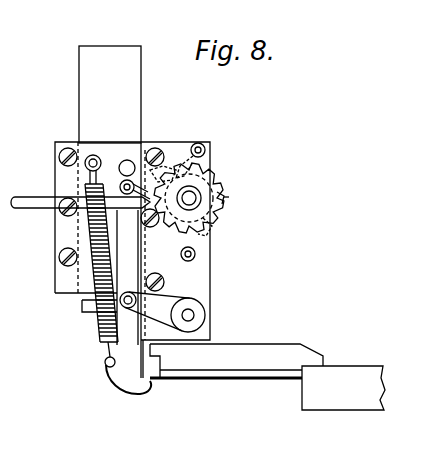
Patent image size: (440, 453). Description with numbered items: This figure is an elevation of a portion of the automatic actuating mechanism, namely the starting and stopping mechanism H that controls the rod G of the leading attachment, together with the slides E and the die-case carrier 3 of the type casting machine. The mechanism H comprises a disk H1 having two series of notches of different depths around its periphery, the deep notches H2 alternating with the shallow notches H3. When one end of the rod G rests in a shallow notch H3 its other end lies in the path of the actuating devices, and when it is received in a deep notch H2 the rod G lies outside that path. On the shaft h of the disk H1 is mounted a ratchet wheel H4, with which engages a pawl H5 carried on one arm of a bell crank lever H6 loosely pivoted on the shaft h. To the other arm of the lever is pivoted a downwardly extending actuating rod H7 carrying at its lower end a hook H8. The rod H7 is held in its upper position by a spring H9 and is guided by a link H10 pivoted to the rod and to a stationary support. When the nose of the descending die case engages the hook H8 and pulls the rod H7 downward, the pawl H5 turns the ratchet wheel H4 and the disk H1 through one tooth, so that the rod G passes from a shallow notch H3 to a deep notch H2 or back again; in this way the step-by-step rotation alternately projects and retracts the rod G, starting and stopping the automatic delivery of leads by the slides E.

The slides E is at (110, 94).
The rod G is at (33, 199).
The starting and stopping mechanism H is at (199, 195).
The shaft h is at (195, 190).
The disk H1 is at (222, 197).
The deep notches H2 is at (210, 223).
The shallow notches H3 is at (224, 200).
The ratchet wheel H4 is at (210, 243).
The pawl H5 is at (180, 174).
The bell crank lever H6 is at (148, 168).
The actuating rod H7 is at (132, 268).
The hook H8 is at (124, 387).
The spring H9 is at (93, 239).
The link H10 is at (205, 302).
The carrier for the die-case 3 is at (267, 377).